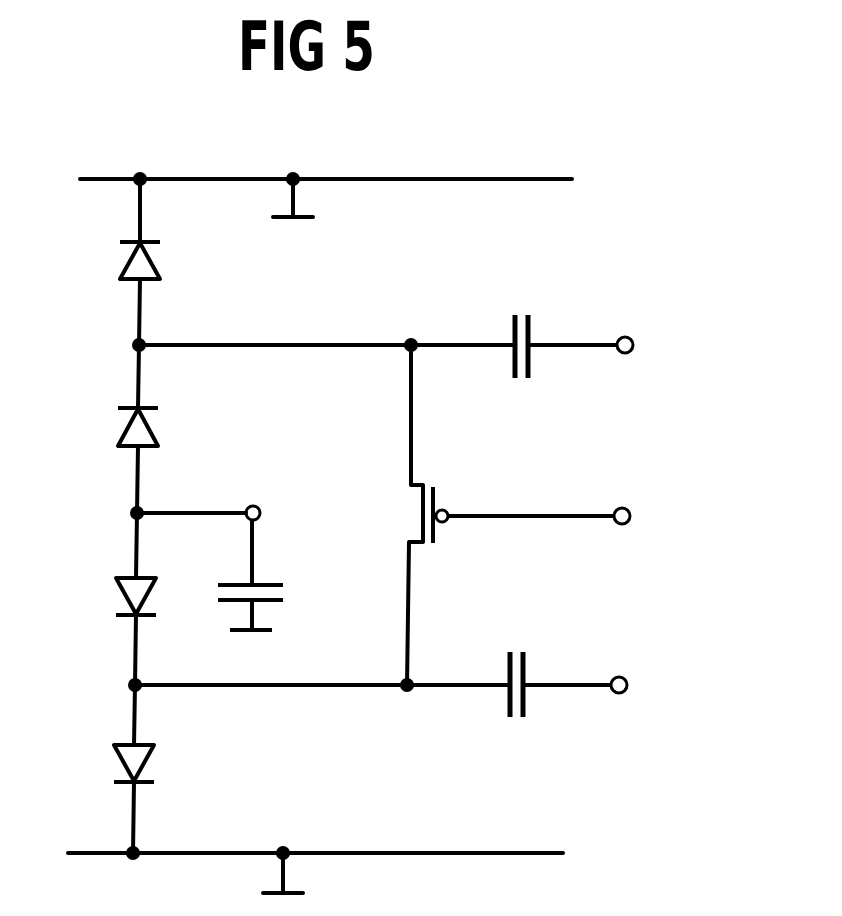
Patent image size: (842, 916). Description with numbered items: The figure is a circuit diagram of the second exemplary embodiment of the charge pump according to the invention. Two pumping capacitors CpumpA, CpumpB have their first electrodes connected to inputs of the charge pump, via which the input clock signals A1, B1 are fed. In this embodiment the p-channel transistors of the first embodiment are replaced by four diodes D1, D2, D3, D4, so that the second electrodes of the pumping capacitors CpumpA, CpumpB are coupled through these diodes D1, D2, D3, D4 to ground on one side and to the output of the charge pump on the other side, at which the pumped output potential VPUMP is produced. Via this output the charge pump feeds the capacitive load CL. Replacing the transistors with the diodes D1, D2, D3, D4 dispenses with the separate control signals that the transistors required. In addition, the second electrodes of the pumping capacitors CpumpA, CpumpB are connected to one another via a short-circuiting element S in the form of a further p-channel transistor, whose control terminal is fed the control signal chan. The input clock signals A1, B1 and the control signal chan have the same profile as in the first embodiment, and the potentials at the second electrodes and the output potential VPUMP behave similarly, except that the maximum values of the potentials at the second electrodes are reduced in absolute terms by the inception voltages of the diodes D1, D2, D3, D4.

The diode D1 is at (122, 266).
The diode D2 is at (120, 428).
The diode D3 is at (118, 582).
The diode D4 is at (113, 752).
The pumped output potential VPUMP is at (288, 481).
The capacitive load CL is at (268, 583).
The short-circuiting element S is at (436, 500).
The control signal chan is at (584, 514).
The pumping capacitor CpumpA is at (532, 330).
The input clock signal A1 is at (658, 349).
The pumping capacitor CpumpB is at (528, 668).
The input clock signal B1 is at (653, 686).